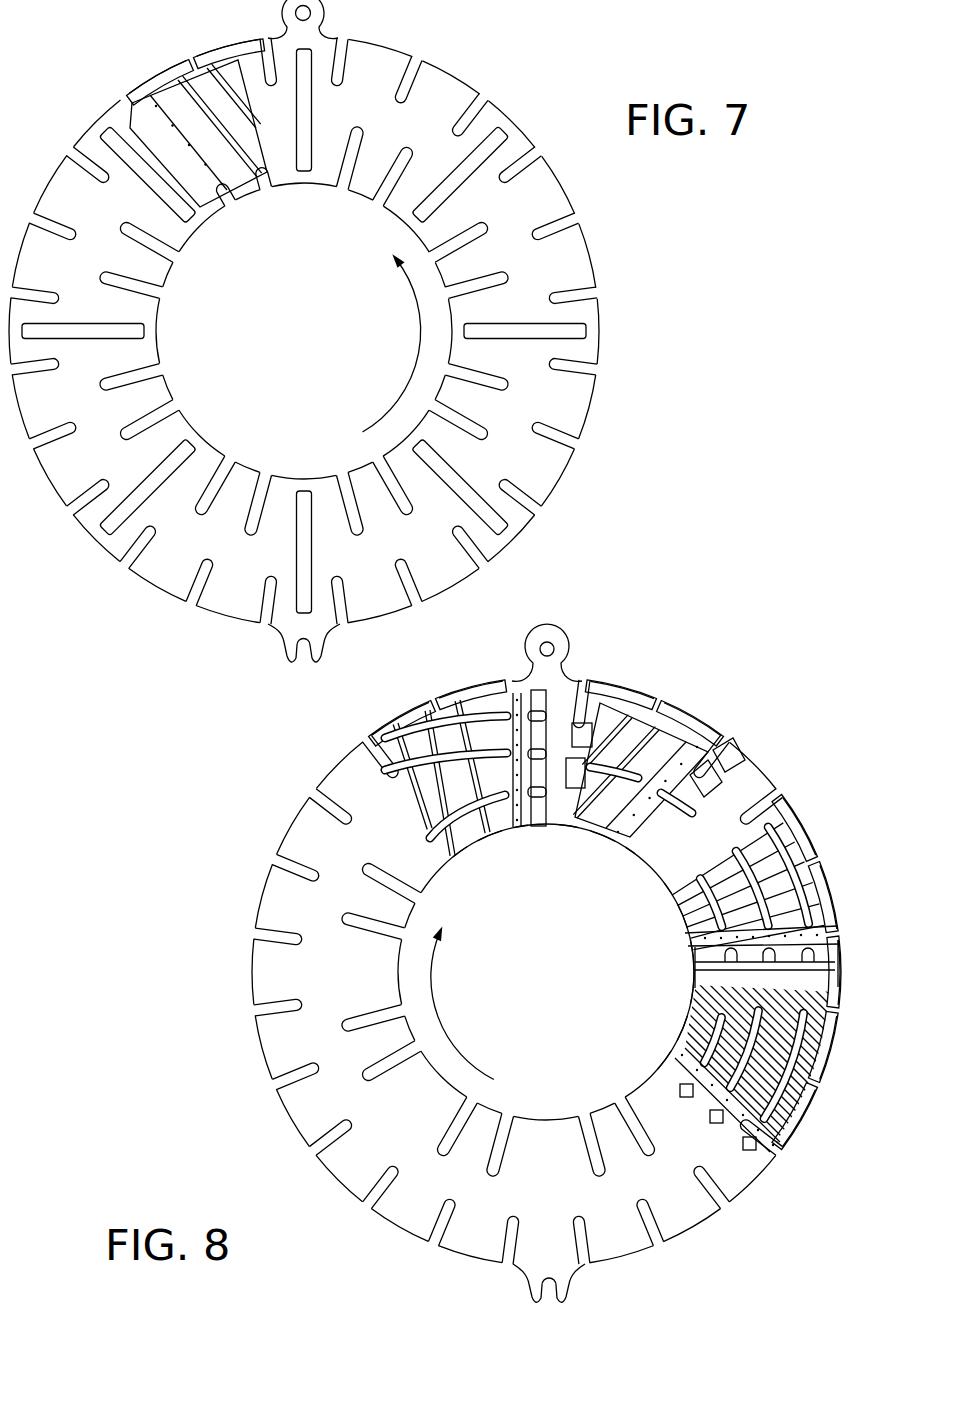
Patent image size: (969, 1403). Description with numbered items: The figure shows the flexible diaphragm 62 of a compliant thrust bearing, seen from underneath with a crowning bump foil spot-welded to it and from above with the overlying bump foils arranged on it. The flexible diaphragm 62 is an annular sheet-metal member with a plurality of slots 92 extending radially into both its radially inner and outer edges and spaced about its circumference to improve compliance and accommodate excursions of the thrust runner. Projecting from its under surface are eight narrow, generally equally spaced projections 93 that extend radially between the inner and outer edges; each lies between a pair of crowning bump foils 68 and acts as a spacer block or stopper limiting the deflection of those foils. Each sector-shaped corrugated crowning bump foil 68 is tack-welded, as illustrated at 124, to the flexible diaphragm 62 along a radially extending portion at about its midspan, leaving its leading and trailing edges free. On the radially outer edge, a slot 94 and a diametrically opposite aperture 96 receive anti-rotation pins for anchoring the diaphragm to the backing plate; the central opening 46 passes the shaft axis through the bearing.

In FIG. 7, the central opening / hub 46 is at (415, 346).
In FIG. 8, the central opening / hub 46 is at (446, 1020).
In FIG. 7, the flexible diaphragm 62 is at (592, 250).
In FIG. 8, the flexible diaphragm 62 is at (753, 765).
In FIG. 7, the crowning bump foils 68 is at (230, 70).
In FIG. 7, the slots 92 is at (484, 104).
In FIG. 7, the projections (spacer blocks) 93 is at (500, 135).
In FIG. 7, the slot 94 is at (312, 660).
In FIG. 8, the slot 94 is at (574, 1300).
In FIG. 7, the aperture 96 is at (311, 12).
In FIG. 8, the aperture 96 is at (554, 650).
In FIG. 7, the tack-weld 124 is at (167, 122).